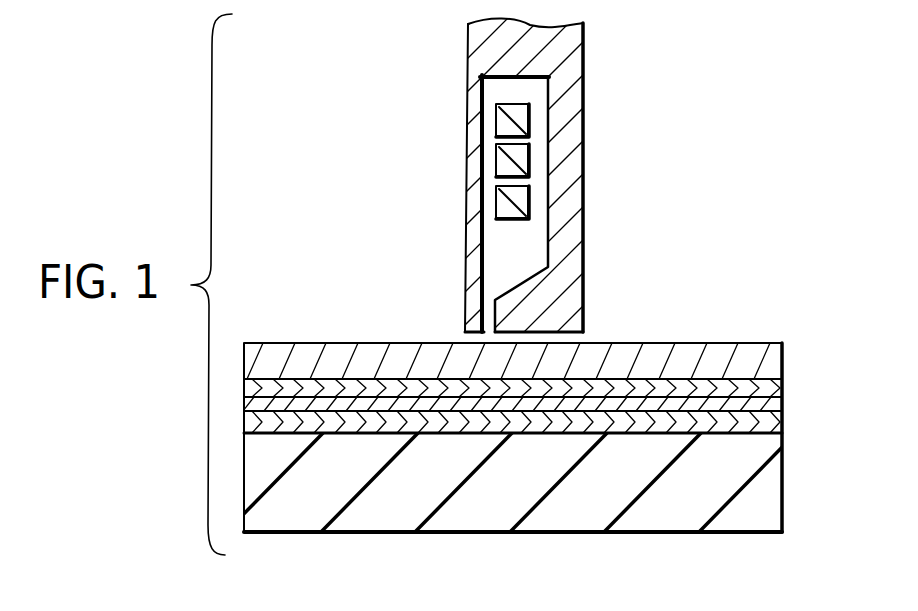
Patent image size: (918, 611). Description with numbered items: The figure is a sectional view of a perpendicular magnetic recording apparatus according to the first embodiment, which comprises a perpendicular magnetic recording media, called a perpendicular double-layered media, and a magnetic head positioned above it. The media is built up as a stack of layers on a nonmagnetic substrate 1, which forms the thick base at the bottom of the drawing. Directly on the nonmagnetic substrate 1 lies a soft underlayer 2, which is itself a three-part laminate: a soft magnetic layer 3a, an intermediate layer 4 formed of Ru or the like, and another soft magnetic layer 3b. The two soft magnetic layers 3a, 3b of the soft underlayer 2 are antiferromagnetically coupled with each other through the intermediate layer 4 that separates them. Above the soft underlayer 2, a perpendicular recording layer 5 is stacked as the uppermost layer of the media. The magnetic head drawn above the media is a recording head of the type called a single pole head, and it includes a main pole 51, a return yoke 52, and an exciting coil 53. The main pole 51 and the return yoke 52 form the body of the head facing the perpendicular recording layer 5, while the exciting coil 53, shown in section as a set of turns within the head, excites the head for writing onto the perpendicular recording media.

The nonmagnetic substrate 1 is at (773, 505).
The soft underlayer 2 is at (566, 407).
The soft magnetic layer 3a is at (541, 434).
The soft magnetic layer 3b is at (777, 391).
The intermediate layer 4 is at (780, 405).
The perpendicular recording layer 5 is at (776, 364).
The main pole 51 is at (471, 128).
The return yoke 52 is at (573, 92).
The exciting coil 53 is at (506, 204).